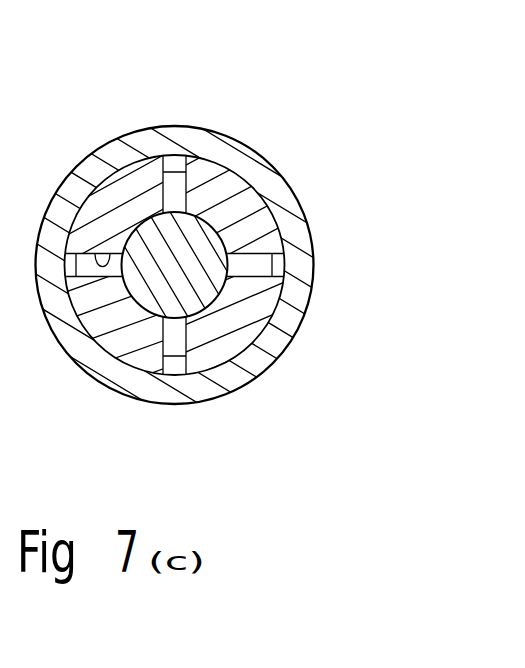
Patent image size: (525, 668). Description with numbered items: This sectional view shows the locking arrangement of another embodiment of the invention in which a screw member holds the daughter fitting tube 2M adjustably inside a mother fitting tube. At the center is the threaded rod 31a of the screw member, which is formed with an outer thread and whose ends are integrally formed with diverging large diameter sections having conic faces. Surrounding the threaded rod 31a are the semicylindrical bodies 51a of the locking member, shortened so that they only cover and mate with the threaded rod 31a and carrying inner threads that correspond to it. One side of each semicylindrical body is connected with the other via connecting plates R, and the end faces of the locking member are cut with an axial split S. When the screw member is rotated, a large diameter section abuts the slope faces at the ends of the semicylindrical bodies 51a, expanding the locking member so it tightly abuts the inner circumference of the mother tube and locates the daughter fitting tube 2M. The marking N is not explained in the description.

The daughter fitting tube 2M is at (126, 135).
The connecting plates R is at (58, 267).
The semicylindrical bodies 51a is at (230, 185).
The threaded rod 31a is at (133, 290).
The north pole N is at (92, 254).
The axial split S is at (186, 190).